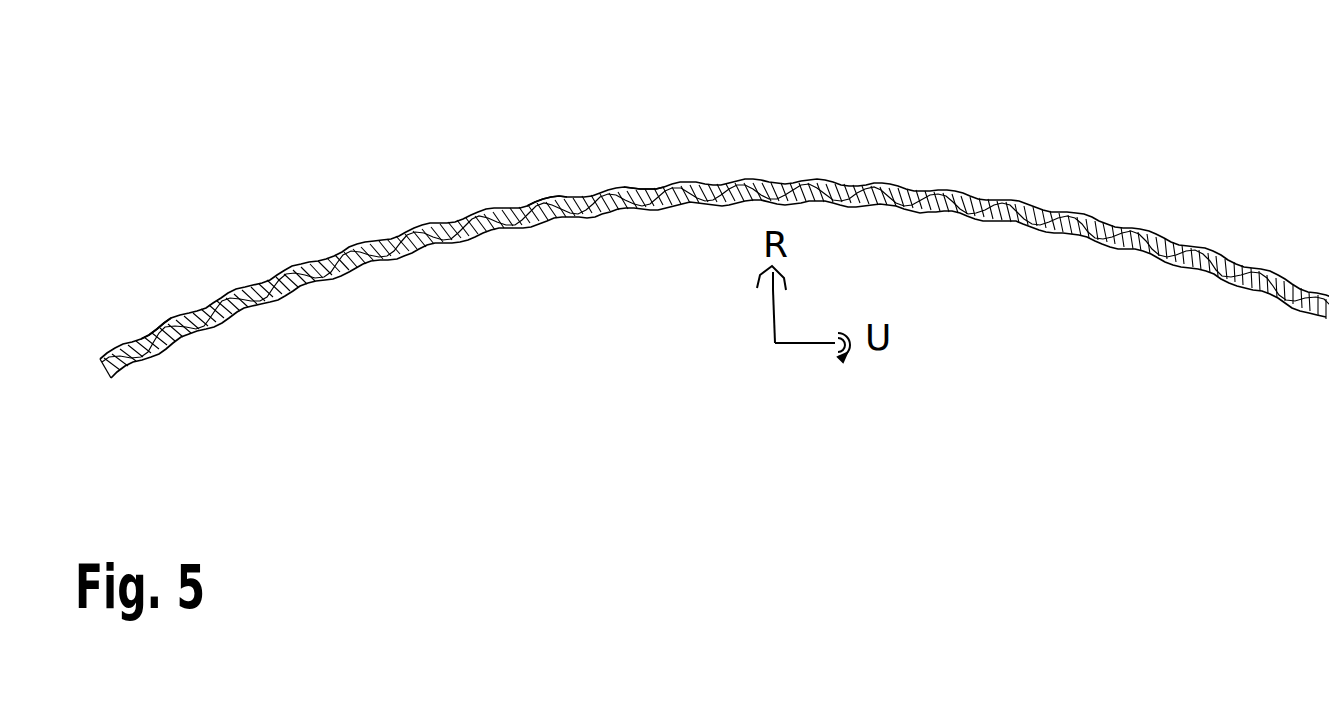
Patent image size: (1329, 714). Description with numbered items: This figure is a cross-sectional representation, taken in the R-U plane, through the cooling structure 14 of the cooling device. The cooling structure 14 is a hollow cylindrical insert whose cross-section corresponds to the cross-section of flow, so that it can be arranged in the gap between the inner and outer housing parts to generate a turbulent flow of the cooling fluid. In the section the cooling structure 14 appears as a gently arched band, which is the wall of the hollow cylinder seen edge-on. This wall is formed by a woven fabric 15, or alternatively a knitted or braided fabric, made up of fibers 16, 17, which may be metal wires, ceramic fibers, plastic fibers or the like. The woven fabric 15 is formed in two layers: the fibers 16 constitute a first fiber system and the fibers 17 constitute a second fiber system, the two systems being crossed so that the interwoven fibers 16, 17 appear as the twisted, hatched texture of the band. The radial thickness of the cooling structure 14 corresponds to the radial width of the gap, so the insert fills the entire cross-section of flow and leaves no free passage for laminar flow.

The cooling structure 14 is at (1197, 190).
The woven fabric 15 is at (160, 327).
The fibers 16 is at (548, 210).
The fibers 17 is at (648, 190).